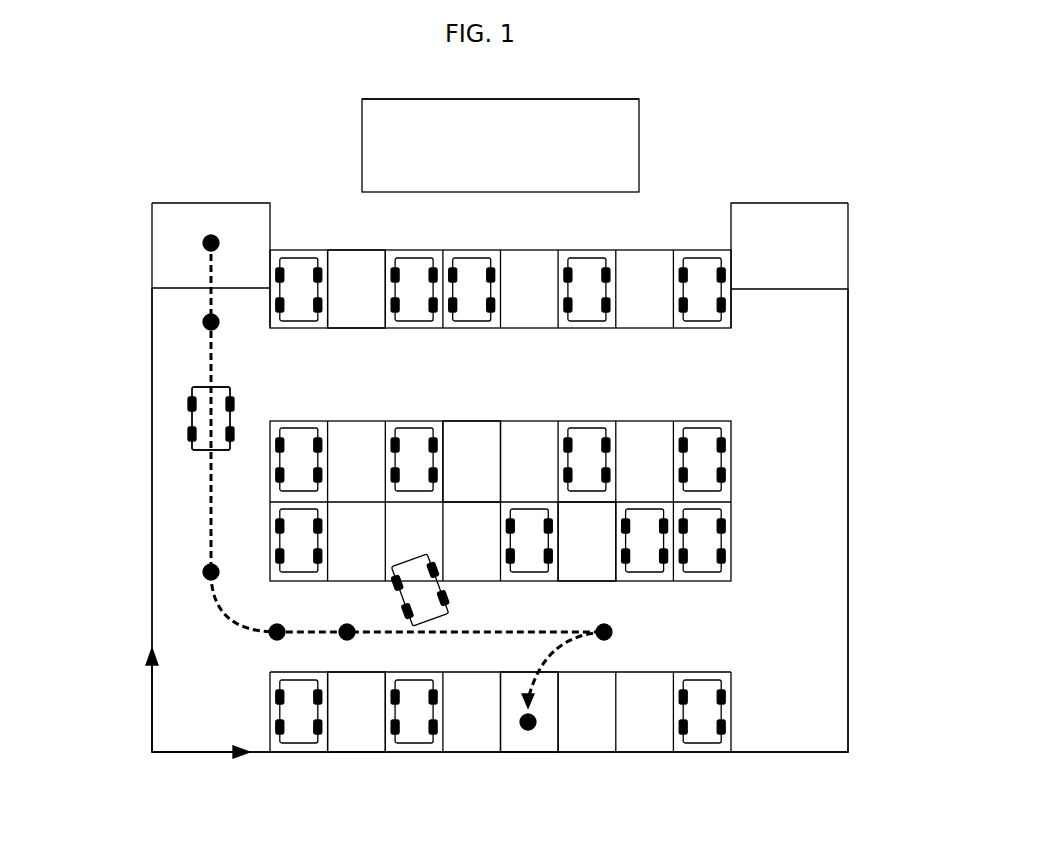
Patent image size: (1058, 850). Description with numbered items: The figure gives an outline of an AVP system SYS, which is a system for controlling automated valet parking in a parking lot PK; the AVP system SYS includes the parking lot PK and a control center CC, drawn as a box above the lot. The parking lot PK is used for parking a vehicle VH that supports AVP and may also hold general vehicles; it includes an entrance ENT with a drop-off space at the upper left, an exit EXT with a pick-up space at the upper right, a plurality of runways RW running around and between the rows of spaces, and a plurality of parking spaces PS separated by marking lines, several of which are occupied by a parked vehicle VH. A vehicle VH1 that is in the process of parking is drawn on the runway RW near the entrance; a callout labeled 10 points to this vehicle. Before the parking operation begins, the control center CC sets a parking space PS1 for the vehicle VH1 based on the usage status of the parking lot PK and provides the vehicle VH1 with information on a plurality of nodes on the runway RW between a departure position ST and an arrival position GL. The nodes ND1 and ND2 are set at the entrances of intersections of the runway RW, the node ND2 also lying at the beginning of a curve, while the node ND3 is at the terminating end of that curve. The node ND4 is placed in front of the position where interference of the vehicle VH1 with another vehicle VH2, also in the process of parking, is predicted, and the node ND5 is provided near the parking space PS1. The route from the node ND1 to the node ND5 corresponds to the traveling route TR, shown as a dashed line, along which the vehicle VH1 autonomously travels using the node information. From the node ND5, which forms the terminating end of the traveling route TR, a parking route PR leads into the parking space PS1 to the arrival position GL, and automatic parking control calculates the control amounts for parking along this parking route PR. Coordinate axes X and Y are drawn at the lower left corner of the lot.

The AVP system SYS is at (724, 100).
The control center CC is at (598, 100).
The parking lot PK is at (864, 311).
The entrance ENT is at (170, 202).
The exit EXT is at (817, 203).
The runway RW is at (152, 335).
The departure position ST is at (211, 235).
The node ND1 is at (237, 335).
The node ND2 is at (237, 559).
The node ND3 is at (275, 616).
The node ND4 is at (348, 616).
The node ND5 is at (635, 632).
The vehicle control device 10 is at (168, 398).
The vehicle VH1 is at (193, 458).
The another vehicle VH2 is at (407, 563).
The vehicle VH is at (701, 775).
The parking space PS is at (355, 268).
The parking space PS1 is at (515, 743).
The traveling route TR is at (210, 540).
The arrival position GL is at (538, 752).
The parking route PR is at (553, 650).
The X axis X is at (201, 768).
The Y axis Y is at (140, 699).